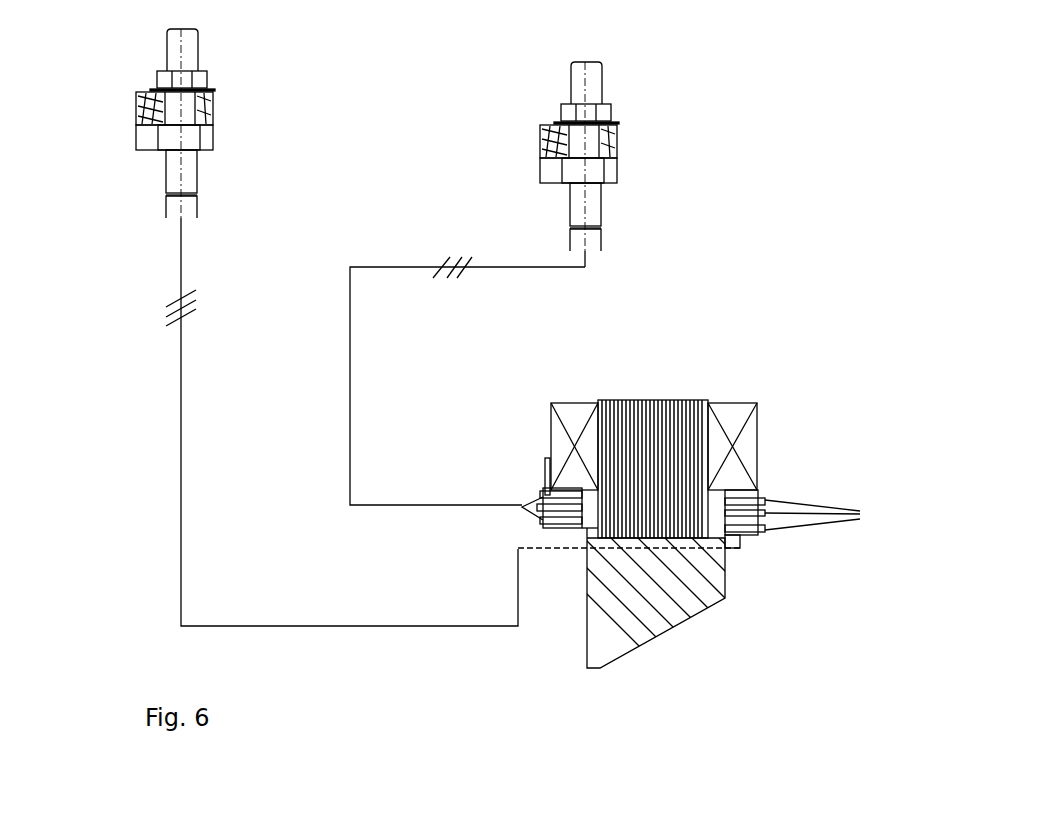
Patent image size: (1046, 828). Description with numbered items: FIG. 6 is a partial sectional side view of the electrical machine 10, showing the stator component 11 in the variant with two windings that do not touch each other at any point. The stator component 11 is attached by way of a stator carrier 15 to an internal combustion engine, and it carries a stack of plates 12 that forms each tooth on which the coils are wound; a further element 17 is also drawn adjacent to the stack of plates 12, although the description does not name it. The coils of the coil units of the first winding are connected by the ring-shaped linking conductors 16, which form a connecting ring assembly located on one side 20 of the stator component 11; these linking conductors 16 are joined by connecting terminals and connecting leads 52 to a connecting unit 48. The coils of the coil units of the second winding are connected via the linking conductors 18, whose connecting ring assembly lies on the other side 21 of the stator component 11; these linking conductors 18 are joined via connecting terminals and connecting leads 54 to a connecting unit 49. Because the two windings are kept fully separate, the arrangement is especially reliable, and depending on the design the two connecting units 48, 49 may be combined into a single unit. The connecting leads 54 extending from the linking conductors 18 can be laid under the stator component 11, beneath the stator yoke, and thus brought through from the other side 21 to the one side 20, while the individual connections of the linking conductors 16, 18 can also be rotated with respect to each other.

The electrical machine 10 is at (115, 282).
The stator component 11 is at (485, 649).
The stack of plates 12 is at (654, 441).
The stator carrier 15 is at (616, 629).
The linking conductors 16 is at (560, 514).
The retaining bracket 17 is at (503, 461).
The linking conductors 18 is at (810, 519).
The one side 20 is at (416, 546).
The other side 21 is at (805, 461).
The connecting unit 48 is at (626, 152).
The connecting unit 49 is at (231, 123).
The connecting leads 52 is at (417, 381).
The connecting leads 54 is at (268, 422).